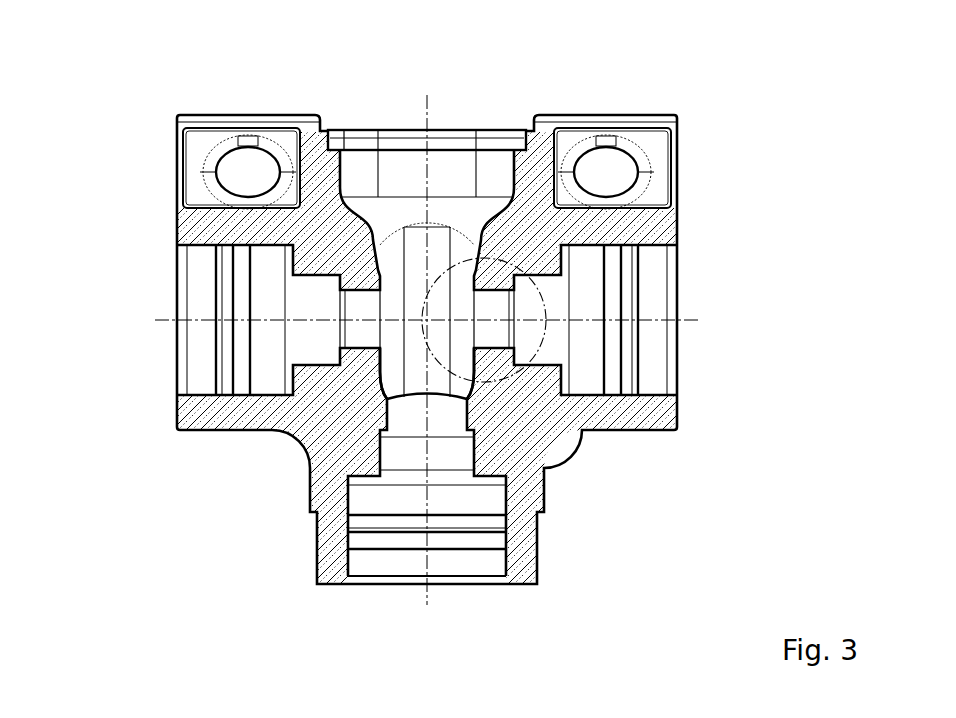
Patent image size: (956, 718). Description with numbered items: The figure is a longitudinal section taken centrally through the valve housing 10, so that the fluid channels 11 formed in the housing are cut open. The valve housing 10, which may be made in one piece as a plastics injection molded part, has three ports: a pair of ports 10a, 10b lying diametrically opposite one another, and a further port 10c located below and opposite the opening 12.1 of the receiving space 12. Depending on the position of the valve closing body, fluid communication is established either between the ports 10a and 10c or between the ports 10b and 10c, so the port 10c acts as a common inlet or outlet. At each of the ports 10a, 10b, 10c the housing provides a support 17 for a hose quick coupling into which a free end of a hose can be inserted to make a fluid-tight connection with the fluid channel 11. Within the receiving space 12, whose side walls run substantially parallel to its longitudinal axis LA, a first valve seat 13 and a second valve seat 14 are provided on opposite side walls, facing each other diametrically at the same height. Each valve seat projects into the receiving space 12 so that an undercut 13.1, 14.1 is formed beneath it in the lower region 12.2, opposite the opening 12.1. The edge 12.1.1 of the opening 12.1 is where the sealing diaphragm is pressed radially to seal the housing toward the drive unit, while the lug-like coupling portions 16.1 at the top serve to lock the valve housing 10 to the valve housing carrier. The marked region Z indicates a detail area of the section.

The valve housing 10 is at (447, 366).
The port 10a is at (166, 340).
The port 10b is at (691, 309).
The port 10c is at (449, 606).
The fluid channel 11 is at (228, 431).
The receiving space 12 is at (389, 378).
The opening 12.1 is at (474, 124).
The edge 12.1.1 is at (337, 124).
The lower region 12.2 is at (483, 406).
The first valve seat 13 is at (353, 274).
The undercut 13.1 is at (365, 380).
The second valve seat 14 is at (501, 275).
The undercut 14.1 is at (494, 387).
The lug-like coupling portion 16.1 is at (200, 120).
The support 17 is at (659, 262).
The detail region Z is at (515, 370).
The longitudinal axis LA is at (427, 592).